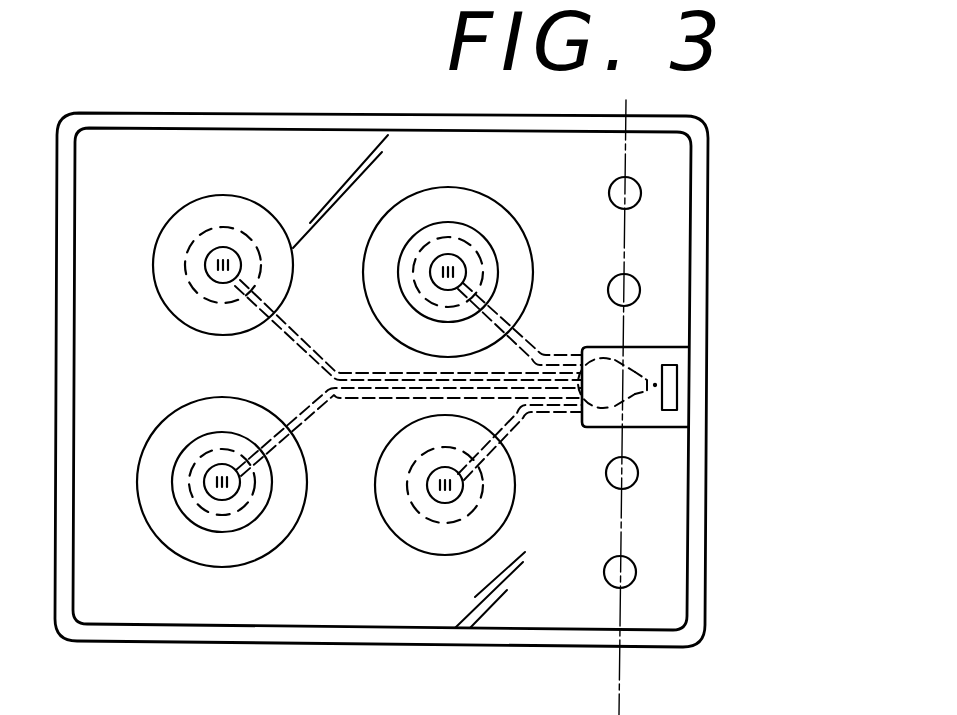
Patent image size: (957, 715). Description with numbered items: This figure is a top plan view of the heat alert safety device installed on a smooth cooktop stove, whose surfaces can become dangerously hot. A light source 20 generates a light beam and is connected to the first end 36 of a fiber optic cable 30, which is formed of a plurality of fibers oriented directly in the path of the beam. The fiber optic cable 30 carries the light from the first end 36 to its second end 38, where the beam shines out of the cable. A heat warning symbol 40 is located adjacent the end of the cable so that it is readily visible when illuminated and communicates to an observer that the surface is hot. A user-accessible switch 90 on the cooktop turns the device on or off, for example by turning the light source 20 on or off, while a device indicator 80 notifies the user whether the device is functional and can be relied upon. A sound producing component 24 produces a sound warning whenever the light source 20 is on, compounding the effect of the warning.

The light source 20 is at (606, 398).
The sound producing component 24 is at (648, 367).
The fiber optic cable 30 is at (348, 398).
The first end of the fiber optic cable 36 is at (572, 413).
The second end of the fiber optic cable 38 is at (238, 490).
The heat warning symbol 40 is at (433, 497).
The device indicator 80 is at (648, 405).
The switch 90 is at (680, 370).